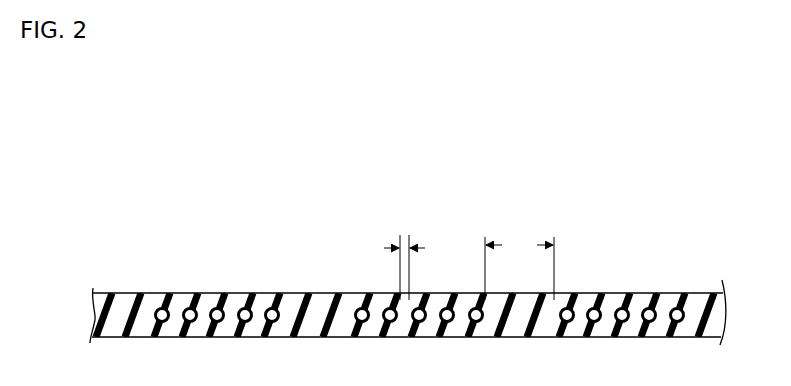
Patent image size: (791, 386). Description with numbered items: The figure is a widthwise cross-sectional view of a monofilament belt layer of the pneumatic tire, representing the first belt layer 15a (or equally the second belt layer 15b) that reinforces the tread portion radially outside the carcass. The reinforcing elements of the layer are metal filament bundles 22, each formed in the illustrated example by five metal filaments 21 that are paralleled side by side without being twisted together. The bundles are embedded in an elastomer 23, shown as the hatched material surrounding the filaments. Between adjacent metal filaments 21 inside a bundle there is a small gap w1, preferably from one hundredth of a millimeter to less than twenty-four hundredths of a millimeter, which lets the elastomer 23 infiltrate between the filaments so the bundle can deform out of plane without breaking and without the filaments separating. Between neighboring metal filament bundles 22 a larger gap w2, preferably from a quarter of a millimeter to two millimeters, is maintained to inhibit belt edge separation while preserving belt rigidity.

The first belt layer 15a is at (651, 241).
The second belt layer 15b is at (408, 275).
The metal filament 21 is at (212, 294).
The metal filament bundle 22 is at (266, 276).
The elastomer 23 is at (328, 294).
The gap between metal filaments w1 is at (404, 258).
The gap between metal filament bundles w2 is at (519, 268).